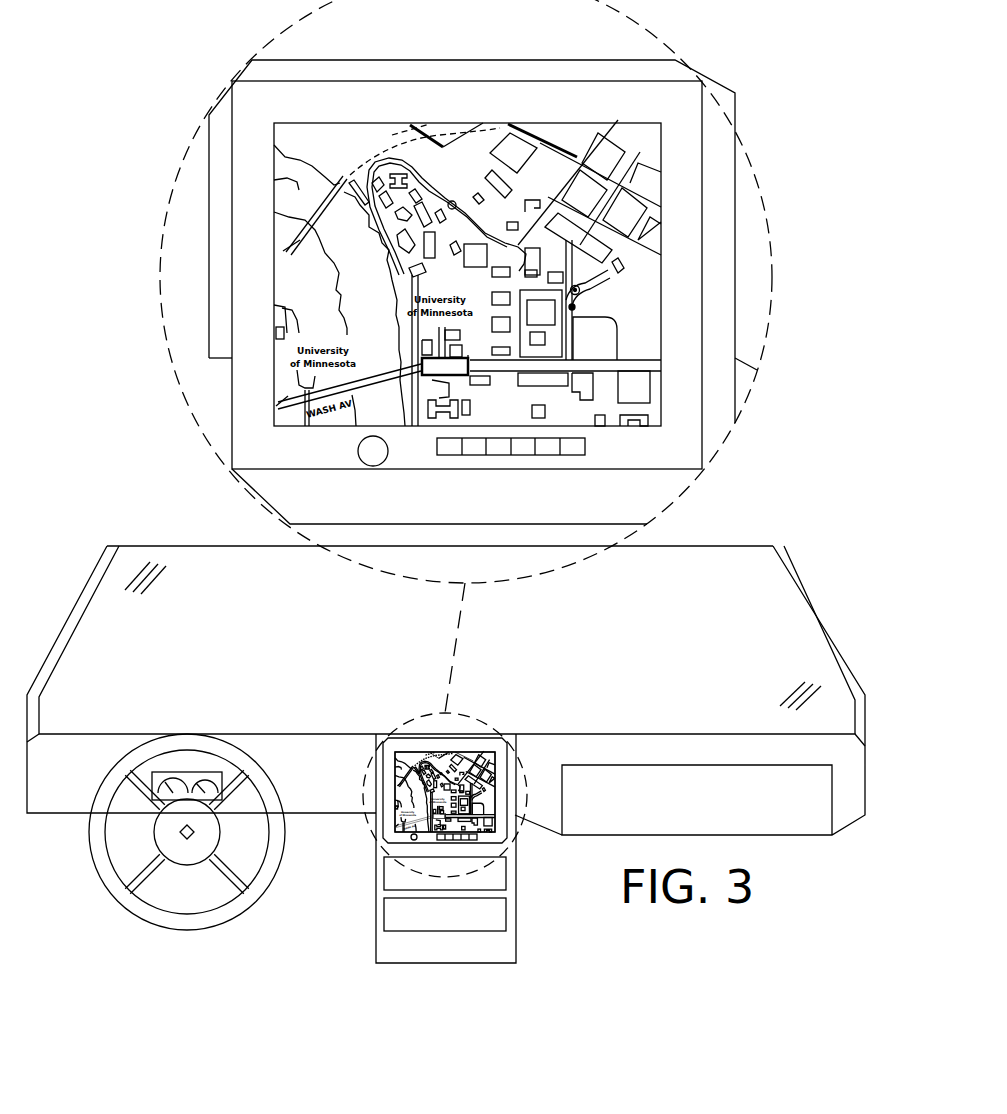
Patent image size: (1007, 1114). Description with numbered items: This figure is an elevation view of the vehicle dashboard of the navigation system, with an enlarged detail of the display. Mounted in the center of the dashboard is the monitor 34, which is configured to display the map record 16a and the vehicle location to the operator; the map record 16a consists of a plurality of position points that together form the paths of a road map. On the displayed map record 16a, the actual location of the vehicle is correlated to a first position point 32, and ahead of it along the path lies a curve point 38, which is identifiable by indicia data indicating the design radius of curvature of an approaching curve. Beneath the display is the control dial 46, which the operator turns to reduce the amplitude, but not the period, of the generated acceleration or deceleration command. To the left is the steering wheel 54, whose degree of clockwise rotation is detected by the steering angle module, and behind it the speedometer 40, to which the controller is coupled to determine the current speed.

The map record 16a is at (290, 185).
The curve point 38 is at (582, 291).
The first position point 32 is at (578, 307).
The control dial 46 is at (360, 461).
The steering wheel 54 is at (225, 737).
The speedometer 40 is at (183, 773).
The monitor 34 is at (410, 753).